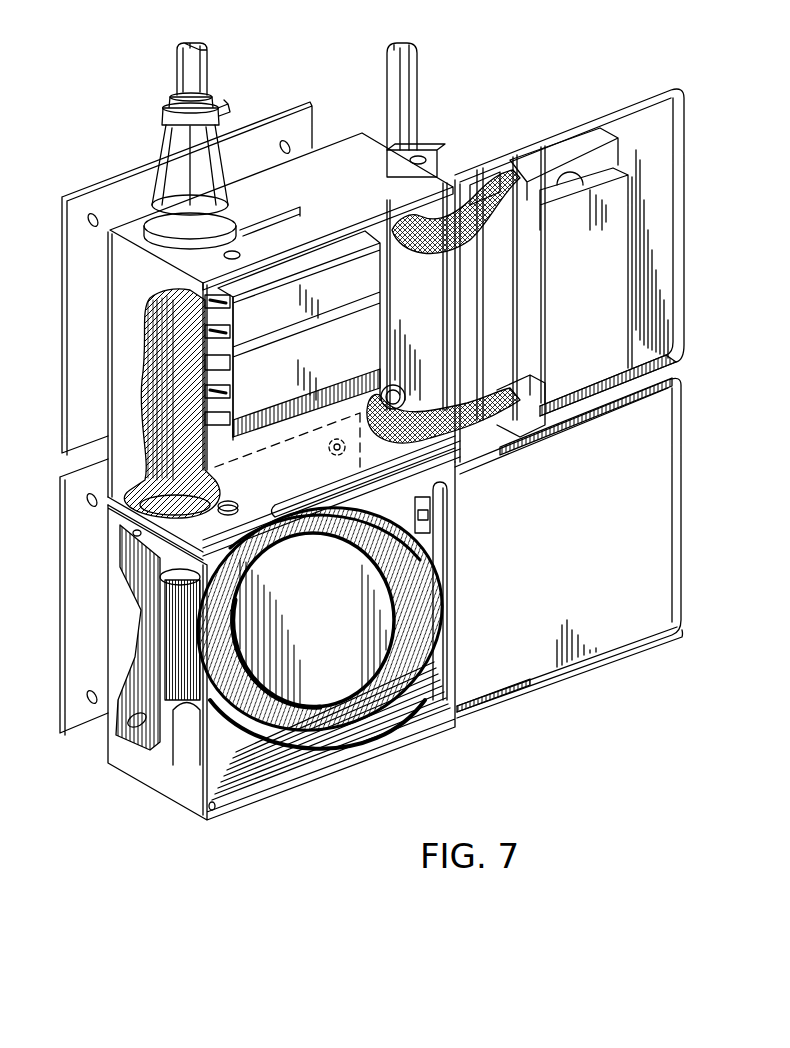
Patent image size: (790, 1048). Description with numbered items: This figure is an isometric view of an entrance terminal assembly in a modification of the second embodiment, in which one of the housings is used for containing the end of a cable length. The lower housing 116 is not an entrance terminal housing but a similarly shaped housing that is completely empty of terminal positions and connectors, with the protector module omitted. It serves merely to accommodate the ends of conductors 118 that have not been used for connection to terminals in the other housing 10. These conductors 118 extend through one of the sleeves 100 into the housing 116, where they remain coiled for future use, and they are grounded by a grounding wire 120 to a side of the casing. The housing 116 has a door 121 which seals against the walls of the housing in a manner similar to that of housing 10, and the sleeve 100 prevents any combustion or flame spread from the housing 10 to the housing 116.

The housing 10 is at (343, 130).
The sleeve 100 is at (222, 499).
The lower housing 116 is at (177, 787).
The conductors 118 is at (340, 750).
The grounding wire 120 is at (433, 520).
The door 121 is at (683, 580).